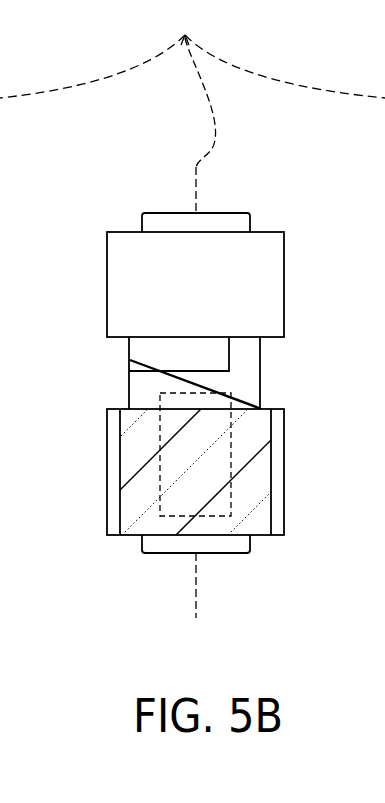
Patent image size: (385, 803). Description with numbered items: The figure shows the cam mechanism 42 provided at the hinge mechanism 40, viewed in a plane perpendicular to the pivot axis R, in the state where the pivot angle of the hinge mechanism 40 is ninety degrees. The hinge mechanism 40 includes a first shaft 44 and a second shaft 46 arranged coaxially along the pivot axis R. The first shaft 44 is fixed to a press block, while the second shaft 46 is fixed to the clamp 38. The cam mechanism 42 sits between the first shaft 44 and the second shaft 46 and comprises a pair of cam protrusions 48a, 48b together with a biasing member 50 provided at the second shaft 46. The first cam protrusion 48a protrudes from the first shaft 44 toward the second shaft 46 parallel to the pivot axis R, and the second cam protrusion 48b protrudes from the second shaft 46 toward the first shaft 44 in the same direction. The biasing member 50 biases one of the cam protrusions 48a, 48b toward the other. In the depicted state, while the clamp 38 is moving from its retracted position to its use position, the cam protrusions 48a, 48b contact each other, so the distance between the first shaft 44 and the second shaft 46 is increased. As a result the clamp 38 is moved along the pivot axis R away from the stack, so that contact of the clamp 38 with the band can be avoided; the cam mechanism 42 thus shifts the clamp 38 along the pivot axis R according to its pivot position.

The pivot axis R is at (192, 85).
The hinge mechanism 40 is at (280, 202).
The first shaft 44 is at (284, 302).
The cam mechanism 42 is at (193, 315).
The first cam protrusion 48a is at (157, 350).
The second cam protrusion 48b is at (129, 389).
The second shaft 46 is at (194, 473).
The biasing member 50 is at (232, 495).
The clamp 38 is at (260, 537).